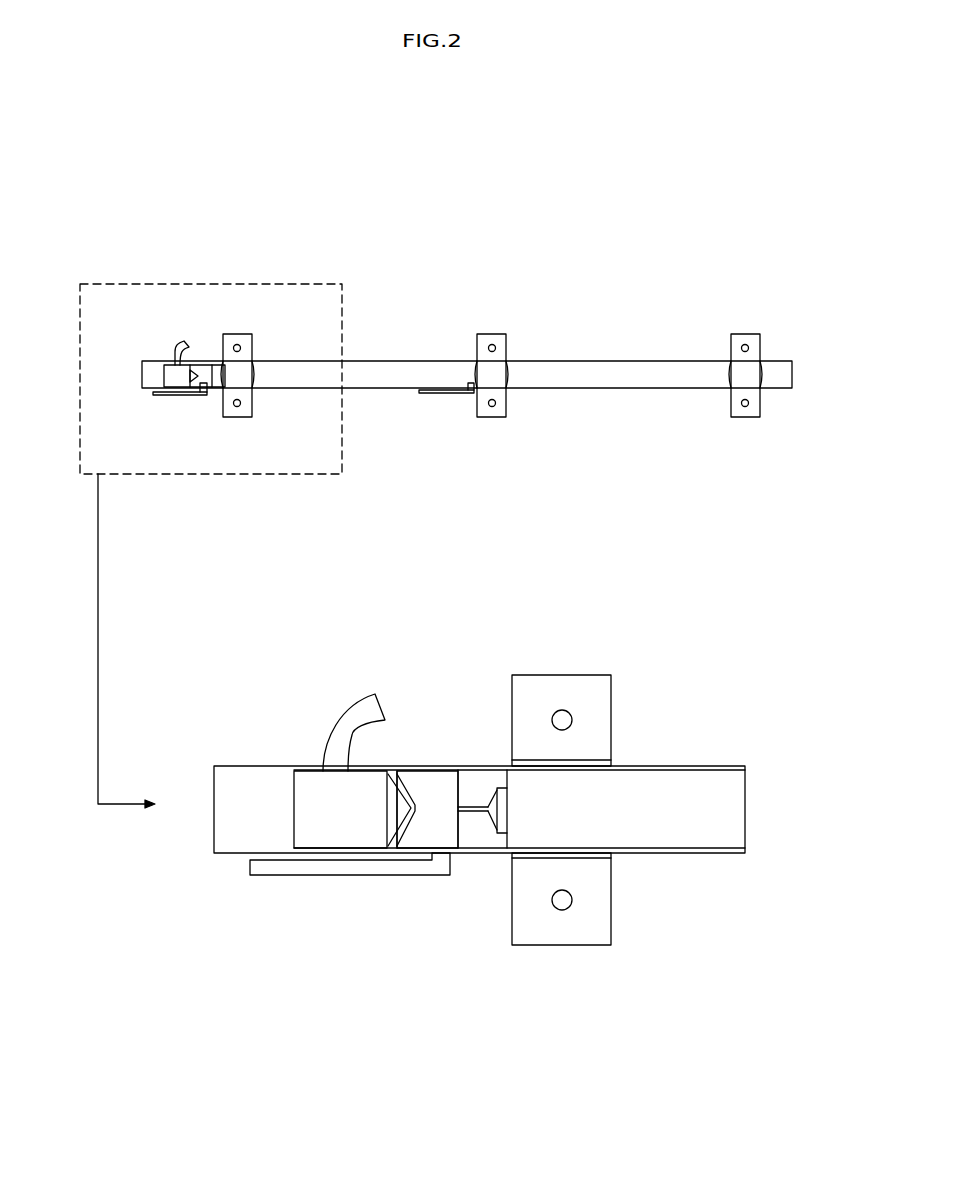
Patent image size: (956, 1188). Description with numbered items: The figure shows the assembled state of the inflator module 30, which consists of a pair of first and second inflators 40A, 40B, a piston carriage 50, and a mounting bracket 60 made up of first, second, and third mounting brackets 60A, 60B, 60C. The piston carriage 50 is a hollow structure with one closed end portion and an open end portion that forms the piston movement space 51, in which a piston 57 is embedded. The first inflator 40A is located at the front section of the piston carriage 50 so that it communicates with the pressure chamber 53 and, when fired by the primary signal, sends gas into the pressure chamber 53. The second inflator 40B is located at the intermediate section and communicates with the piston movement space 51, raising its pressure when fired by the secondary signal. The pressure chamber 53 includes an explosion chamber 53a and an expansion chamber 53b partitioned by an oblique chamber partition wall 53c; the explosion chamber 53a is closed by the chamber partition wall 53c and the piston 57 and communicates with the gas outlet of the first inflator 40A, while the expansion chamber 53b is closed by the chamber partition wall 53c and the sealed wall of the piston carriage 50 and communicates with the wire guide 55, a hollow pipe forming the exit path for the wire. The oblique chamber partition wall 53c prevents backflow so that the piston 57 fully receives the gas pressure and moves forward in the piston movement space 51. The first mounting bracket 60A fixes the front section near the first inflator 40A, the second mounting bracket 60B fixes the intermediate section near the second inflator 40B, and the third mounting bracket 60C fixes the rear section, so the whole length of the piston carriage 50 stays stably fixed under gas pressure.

The inflator module 30 is at (182, 218).
The piston carriage 50 is at (618, 360).
The piston movement space 51 is at (388, 373).
The first inflator 40A is at (181, 396).
The second inflator 40B is at (448, 394).
The wire guide 55 is at (177, 347).
The mounting bracket 60 is at (491, 626).
The first mounting bracket 60A is at (240, 337).
The second mounting bracket 60B is at (492, 345).
The third mounting bracket 60C is at (745, 345).
The pressure chamber 53 is at (507, 618).
The explosion chamber 53a is at (440, 793).
The expansion chamber 53b is at (370, 792).
The chamber partition wall 53c is at (400, 793).
The piston 57 is at (480, 842).